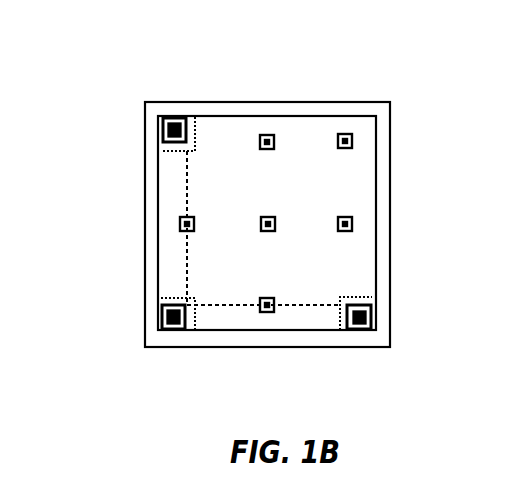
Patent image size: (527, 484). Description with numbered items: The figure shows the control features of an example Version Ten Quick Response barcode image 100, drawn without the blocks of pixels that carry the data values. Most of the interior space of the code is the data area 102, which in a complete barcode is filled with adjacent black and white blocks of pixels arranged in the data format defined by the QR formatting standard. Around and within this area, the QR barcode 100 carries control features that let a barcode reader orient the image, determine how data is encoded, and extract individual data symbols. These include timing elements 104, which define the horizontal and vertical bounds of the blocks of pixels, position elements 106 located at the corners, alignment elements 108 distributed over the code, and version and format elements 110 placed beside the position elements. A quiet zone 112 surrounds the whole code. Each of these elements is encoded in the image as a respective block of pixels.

The QR barcode image 100 is at (391, 162).
The data area 102 is at (302, 147).
The timing elements 104 is at (187, 190).
The position elements 106 is at (162, 130).
The alignment elements 108 is at (179, 224).
The version and format elements 110 is at (197, 118).
The quiet zone 112 is at (275, 116).